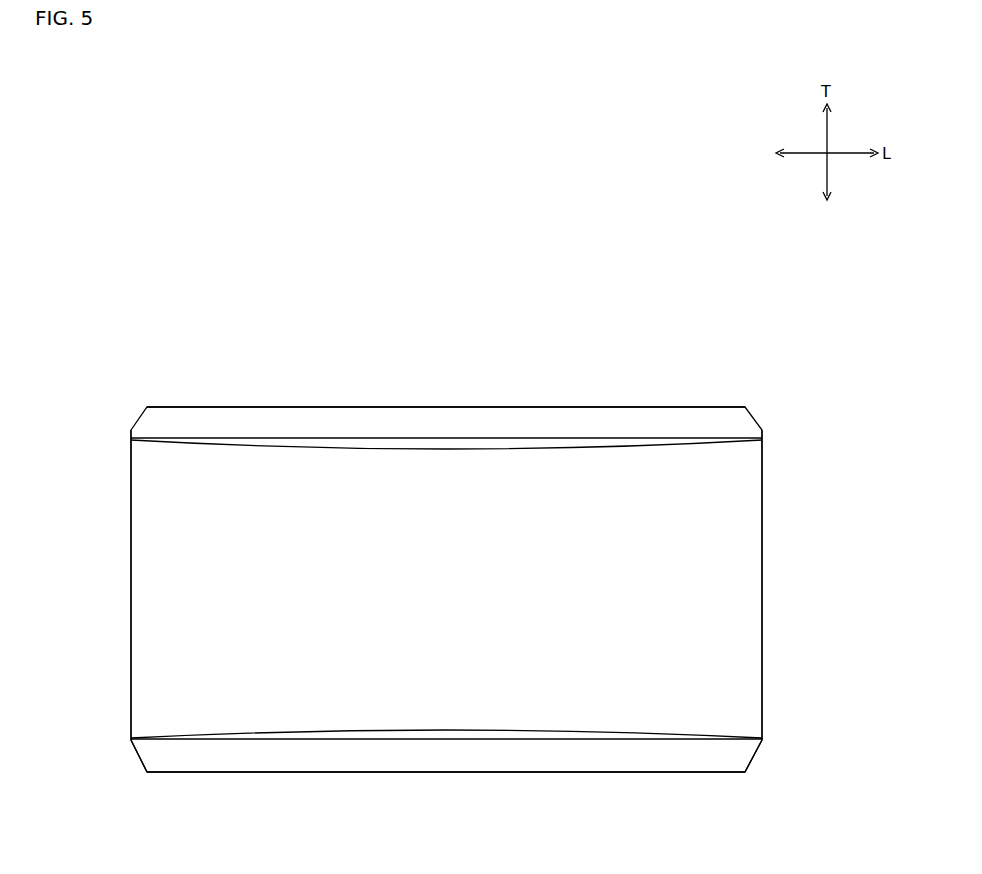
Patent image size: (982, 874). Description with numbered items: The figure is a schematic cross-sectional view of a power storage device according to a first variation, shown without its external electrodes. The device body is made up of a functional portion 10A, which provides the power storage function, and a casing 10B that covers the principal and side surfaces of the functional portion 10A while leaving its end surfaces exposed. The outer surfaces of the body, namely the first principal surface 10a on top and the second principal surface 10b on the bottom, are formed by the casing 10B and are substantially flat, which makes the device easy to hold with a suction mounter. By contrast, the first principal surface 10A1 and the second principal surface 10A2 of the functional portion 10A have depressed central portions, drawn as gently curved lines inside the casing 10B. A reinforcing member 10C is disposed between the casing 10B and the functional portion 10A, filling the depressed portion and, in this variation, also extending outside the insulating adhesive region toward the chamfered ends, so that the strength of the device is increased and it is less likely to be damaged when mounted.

The first principal surface 10a is at (357, 407).
The second principal surface 10b is at (447, 773).
The functional portion 10A is at (243, 738).
The first principal surface of the functional portion 10A1 is at (467, 448).
The second principal surface of the functional portion 10A2 is at (587, 733).
The casing 10B is at (295, 775).
The reinforcing member 10C is at (515, 735).